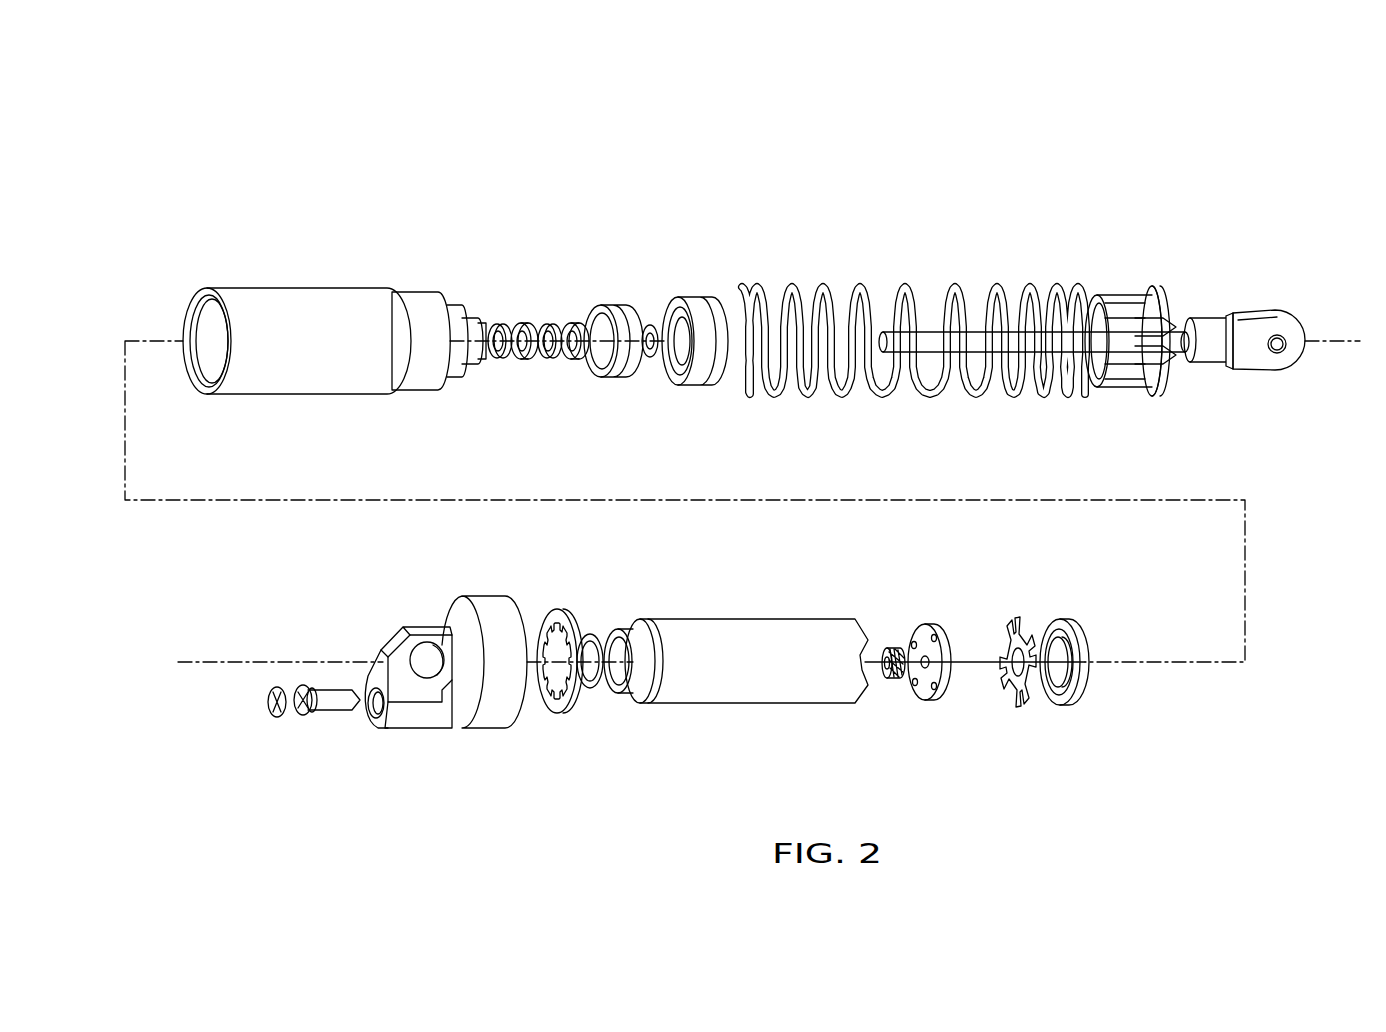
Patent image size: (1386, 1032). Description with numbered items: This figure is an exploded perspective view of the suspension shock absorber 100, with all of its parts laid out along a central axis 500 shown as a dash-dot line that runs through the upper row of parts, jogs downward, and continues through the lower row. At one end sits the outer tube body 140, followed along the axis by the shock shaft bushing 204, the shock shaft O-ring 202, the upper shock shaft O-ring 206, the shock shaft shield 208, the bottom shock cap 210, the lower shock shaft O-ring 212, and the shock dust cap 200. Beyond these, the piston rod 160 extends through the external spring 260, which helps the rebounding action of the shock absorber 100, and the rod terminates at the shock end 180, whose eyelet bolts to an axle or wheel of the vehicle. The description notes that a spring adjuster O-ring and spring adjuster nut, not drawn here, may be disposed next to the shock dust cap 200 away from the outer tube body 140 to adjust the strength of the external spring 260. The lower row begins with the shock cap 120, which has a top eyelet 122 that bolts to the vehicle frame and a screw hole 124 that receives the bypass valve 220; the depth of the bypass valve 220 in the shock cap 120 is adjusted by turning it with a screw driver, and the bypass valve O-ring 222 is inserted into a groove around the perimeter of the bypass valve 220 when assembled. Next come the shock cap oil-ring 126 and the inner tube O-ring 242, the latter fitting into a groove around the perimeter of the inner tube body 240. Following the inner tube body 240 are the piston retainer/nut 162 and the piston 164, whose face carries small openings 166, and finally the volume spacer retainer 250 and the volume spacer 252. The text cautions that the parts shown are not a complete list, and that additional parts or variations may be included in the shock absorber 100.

The suspension shock absorber 100 is at (1054, 143).
The shock cap 120 is at (454, 677).
The top eyelet 122 is at (427, 642).
The screw hole 124 is at (372, 720).
The shock cap oil-ring 126 is at (548, 714).
The outer tube body 140 is at (292, 287).
The piston rod 160 is at (935, 332).
The piston retainer/nut 162 is at (893, 683).
The piston 164 is at (929, 658).
The piston orifices 166 is at (914, 641).
The shock end 180 is at (1247, 312).
The shock dust cap 200 is at (690, 297).
The shock shaft O-ring 202 is at (523, 360).
The shock shaft bushing 204 is at (502, 322).
The upper shock shaft O-ring 206 is at (552, 322).
The shock shaft shield 208 is at (574, 360).
The bottom shock cap 210 is at (612, 305).
The lower shock shaft O-ring 212 is at (650, 360).
The bypass valve 220 is at (327, 716).
The bypass valve O-ring 222 is at (275, 718).
The inner tube body 240 is at (727, 705).
The inner tube O-ring 242 is at (588, 690).
The volume spacer retainer 250 is at (1010, 705).
The volume spacer 252 is at (1062, 706).
The external spring 260 is at (1150, 290).
The central axis 500 is at (1345, 345).